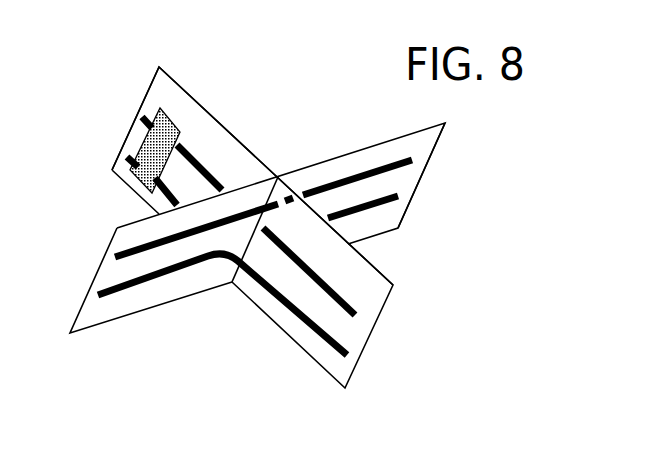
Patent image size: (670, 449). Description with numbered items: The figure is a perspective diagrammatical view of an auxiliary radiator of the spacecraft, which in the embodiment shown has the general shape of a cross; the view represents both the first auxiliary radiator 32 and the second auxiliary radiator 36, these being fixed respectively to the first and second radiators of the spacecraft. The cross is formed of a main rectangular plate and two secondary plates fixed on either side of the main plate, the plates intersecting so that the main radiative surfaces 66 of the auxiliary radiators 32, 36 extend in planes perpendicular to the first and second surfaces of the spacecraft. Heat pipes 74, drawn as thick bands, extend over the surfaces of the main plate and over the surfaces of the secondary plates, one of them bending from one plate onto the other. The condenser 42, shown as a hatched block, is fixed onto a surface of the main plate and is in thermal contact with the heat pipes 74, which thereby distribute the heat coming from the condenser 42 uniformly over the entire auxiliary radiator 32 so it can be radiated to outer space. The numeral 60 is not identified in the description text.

The first auxiliary radiator 32 is at (328, 225).
The second auxiliary radiator 36 is at (328, 225).
The condenser 42 is at (148, 157).
The substrate 60 is at (117, 227).
The main radiative surfaces 66 is at (158, 95).
The heat pipes 74 is at (213, 232).